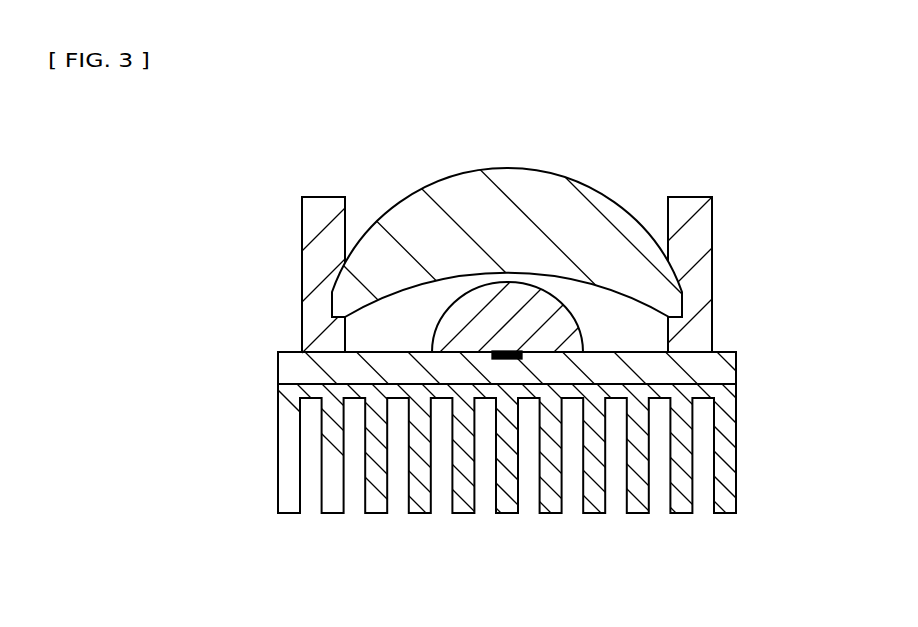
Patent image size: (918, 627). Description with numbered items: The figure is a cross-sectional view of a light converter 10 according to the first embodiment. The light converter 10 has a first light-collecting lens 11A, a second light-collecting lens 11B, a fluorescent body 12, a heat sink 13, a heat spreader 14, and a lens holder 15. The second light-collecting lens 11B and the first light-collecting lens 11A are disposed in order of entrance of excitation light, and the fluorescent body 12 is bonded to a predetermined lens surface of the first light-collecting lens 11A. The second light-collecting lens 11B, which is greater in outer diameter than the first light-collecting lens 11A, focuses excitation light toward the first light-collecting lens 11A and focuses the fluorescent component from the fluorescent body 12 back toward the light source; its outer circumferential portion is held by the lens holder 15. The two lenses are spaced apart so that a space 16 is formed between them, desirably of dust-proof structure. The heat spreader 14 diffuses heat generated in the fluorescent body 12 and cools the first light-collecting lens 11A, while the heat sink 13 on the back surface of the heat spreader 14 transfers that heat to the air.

The light converter 10 is at (345, 146).
The first light-collecting lens 11A is at (560, 317).
The second light-collecting lens 11B is at (582, 228).
The fluorescent body 12 is at (527, 357).
The heat sink 13 is at (423, 500).
The heat spreader 14 is at (282, 370).
The lens holder 15 is at (310, 277).
The space 16 is at (632, 332).